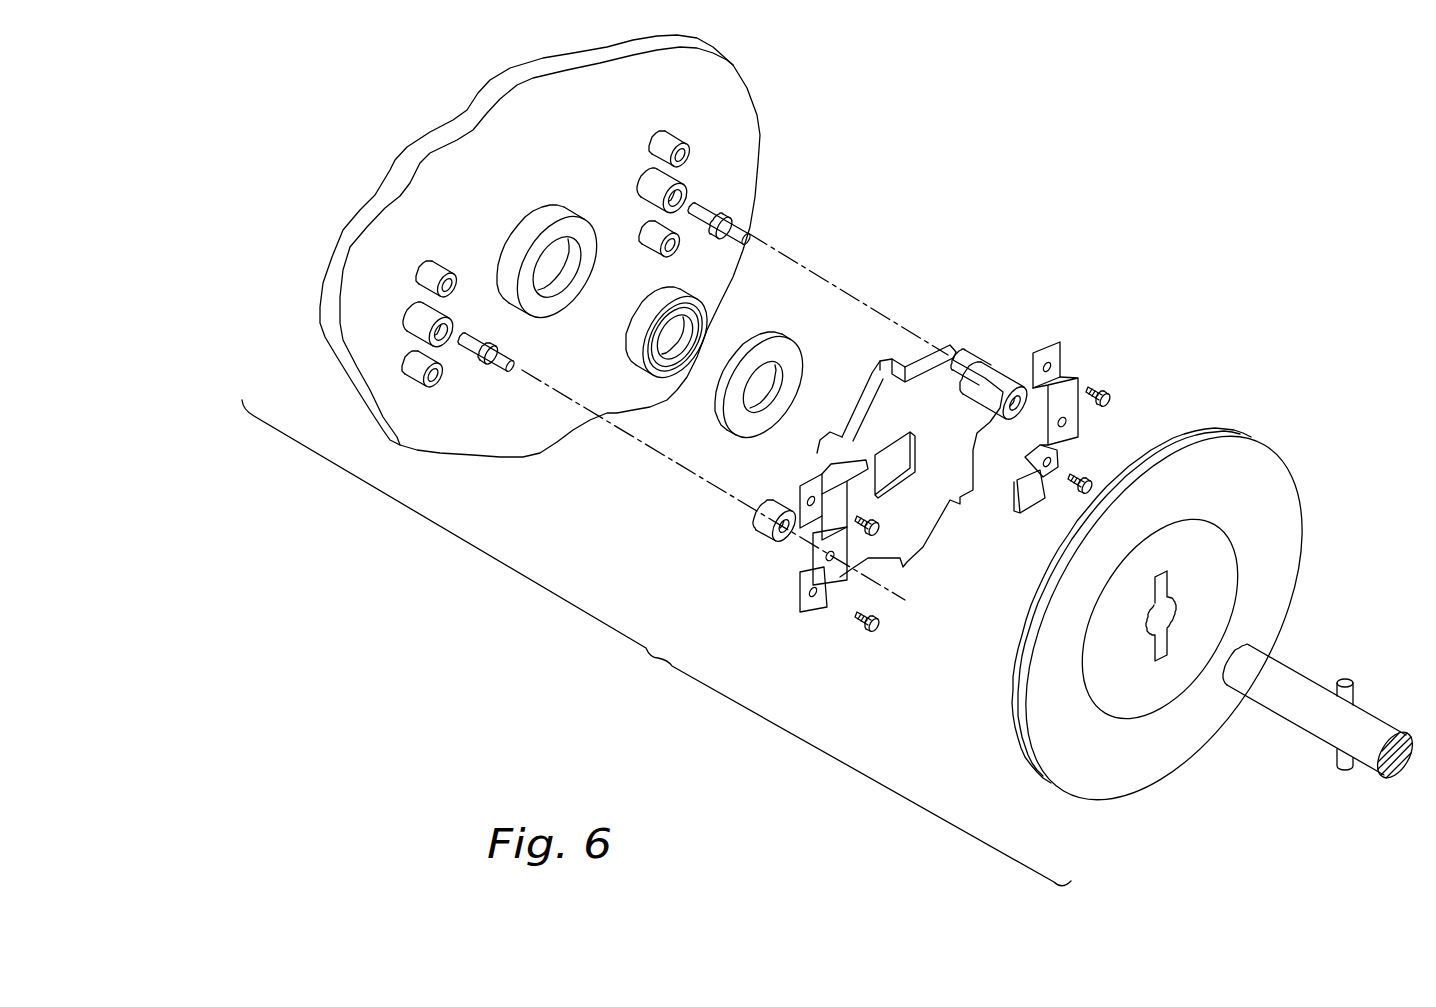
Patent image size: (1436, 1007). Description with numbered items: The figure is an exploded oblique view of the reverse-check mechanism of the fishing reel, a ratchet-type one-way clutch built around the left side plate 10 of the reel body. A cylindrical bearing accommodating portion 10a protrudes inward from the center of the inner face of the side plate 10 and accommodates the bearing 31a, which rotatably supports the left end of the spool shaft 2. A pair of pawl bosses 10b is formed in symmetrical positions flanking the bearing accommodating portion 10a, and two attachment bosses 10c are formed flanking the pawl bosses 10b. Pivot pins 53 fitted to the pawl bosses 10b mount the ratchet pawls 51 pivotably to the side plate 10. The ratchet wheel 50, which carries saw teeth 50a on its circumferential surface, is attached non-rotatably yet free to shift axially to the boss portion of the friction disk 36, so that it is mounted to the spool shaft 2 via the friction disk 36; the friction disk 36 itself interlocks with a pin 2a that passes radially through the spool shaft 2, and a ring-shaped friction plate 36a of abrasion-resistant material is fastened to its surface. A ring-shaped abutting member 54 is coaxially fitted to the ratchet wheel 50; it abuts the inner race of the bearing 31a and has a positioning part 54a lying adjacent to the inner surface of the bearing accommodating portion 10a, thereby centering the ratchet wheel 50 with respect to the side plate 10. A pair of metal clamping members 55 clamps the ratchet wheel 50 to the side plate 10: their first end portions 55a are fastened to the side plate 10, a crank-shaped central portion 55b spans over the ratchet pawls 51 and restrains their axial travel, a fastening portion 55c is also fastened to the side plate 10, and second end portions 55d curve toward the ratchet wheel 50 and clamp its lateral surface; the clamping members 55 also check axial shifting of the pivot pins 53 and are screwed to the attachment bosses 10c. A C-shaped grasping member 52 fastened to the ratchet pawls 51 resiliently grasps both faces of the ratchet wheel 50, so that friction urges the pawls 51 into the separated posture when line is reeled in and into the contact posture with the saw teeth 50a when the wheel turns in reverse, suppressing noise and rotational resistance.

The left side plate 10 is at (727, 112).
The bearing accommodating portion 10a is at (537, 228).
The pawl bosses 10b is at (668, 187).
The attachment bosses 10c is at (672, 146).
The pivot pins 53 is at (736, 229).
The bearing 31a is at (690, 318).
The abutting member 54 is at (748, 413).
The positioning part 54a is at (716, 396).
The ratchet wheel 50 is at (910, 405).
The saw teeth 50a is at (887, 367).
The ratchet pawls 51 is at (1020, 400).
The grasping member 52 is at (1002, 383).
The clamping members 55 is at (1076, 431).
The first end portions 55a is at (1049, 358).
The central portion 55b is at (1082, 395).
The fastening portion 55c is at (1060, 462).
The second end portions 55d is at (857, 497).
The friction disk 36 is at (1170, 618).
The friction plate 36a is at (1273, 490).
The spool shaft 2 is at (1321, 698).
The pin 2a is at (1347, 680).